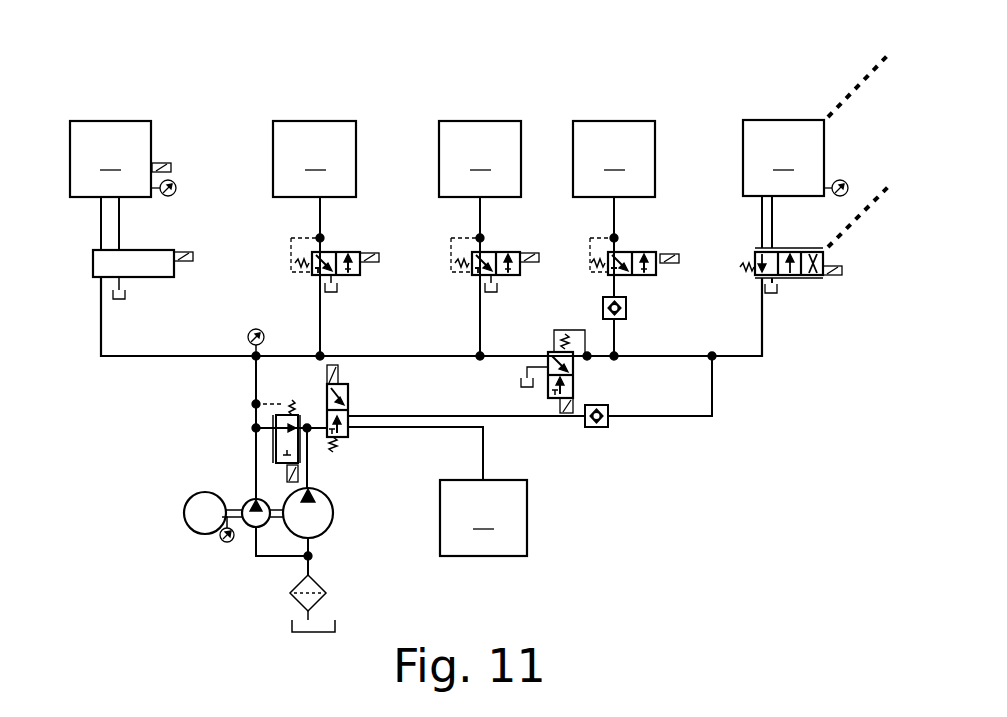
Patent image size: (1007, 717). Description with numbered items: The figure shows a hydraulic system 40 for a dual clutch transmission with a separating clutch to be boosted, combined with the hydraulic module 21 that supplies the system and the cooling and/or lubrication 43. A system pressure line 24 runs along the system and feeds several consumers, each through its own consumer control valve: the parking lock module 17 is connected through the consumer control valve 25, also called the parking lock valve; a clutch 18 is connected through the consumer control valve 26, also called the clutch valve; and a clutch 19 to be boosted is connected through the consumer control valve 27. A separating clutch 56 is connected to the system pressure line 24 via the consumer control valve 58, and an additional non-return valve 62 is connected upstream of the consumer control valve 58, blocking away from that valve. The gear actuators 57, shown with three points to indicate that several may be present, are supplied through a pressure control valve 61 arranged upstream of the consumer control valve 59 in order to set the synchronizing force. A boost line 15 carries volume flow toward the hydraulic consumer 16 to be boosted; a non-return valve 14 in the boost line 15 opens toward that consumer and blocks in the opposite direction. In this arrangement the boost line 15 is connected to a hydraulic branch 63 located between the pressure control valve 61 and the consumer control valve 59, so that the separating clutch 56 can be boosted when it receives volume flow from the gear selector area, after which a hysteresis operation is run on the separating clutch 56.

The non-return valve 14 is at (597, 427).
The boost line 15 is at (712, 385).
The hydraulic consumer to be boosted 16 is at (788, 104).
The parking lock module 17 is at (123, 159).
The clutch 18 is at (314, 159).
The clutch to be boosted 19 is at (480, 159).
The hydraulic module 21 is at (146, 512).
The system pressure line 24 is at (172, 357).
The consumer control valve 25 is at (93, 260).
The consumer control valve 26 is at (312, 272).
The consumer control valve 27 is at (478, 272).
The hydraulic system 40 is at (215, 119).
The cooling and/or lubrication 43 is at (437, 491).
The separating clutch 56 is at (614, 159).
The gear actuators 57 is at (795, 158).
The consumer control valve 58 is at (652, 277).
The consumer control valve 59 is at (810, 278).
The pressure control valve 61 is at (573, 373).
The additional non-return valve 62 is at (603, 302).
The hydraulic branch 63 is at (712, 363).